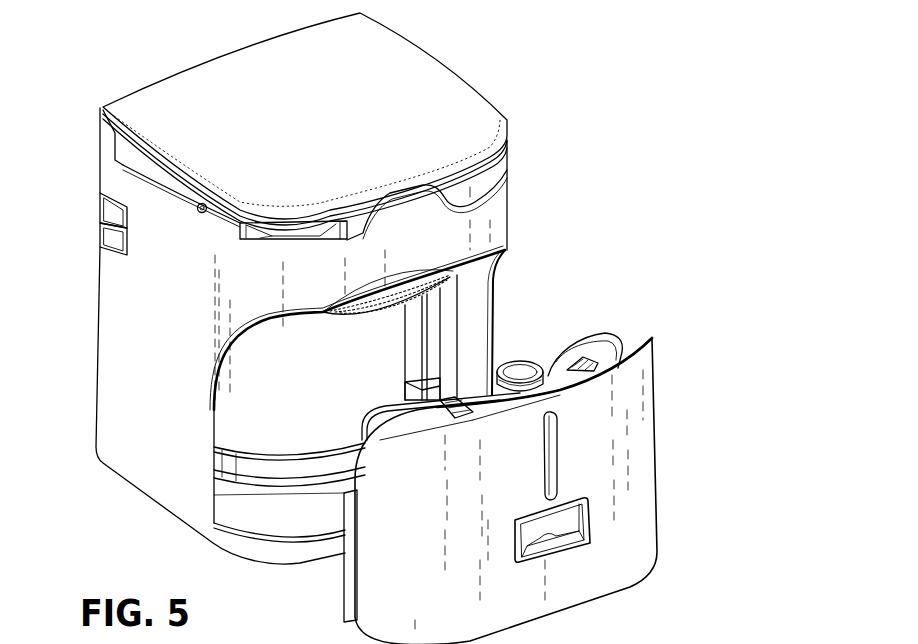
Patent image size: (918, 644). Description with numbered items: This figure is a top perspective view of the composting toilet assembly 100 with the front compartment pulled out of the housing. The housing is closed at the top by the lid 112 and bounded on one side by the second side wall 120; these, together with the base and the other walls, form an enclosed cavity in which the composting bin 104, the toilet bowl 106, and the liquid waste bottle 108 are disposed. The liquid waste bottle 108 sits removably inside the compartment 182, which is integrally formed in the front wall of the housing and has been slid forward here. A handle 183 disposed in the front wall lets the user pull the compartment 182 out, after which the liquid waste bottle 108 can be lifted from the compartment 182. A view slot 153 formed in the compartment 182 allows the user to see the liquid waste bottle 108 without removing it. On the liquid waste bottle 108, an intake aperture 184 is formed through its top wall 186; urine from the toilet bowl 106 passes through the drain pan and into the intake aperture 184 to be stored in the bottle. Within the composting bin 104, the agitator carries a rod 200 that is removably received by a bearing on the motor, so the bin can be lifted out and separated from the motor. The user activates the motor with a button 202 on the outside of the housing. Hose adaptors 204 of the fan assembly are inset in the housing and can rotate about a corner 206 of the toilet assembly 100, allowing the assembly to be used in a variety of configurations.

The composting toilet assembly 100 is at (584, 67).
The composting bin 104 is at (385, 329).
The toilet bowl 106 is at (508, 149).
The liquid waste bottle 108 is at (618, 340).
The lid 112 is at (462, 97).
The second side wall 120 is at (133, 360).
The view slot 153 is at (560, 470).
The compartment 182 is at (344, 494).
The handle 183 is at (593, 527).
The intake aperture 184 is at (527, 360).
The top wall 186 is at (640, 347).
The rod 200 is at (238, 226).
The button 202 is at (197, 204).
The hose adaptors 204 is at (110, 207).
The corner 206 is at (107, 228).